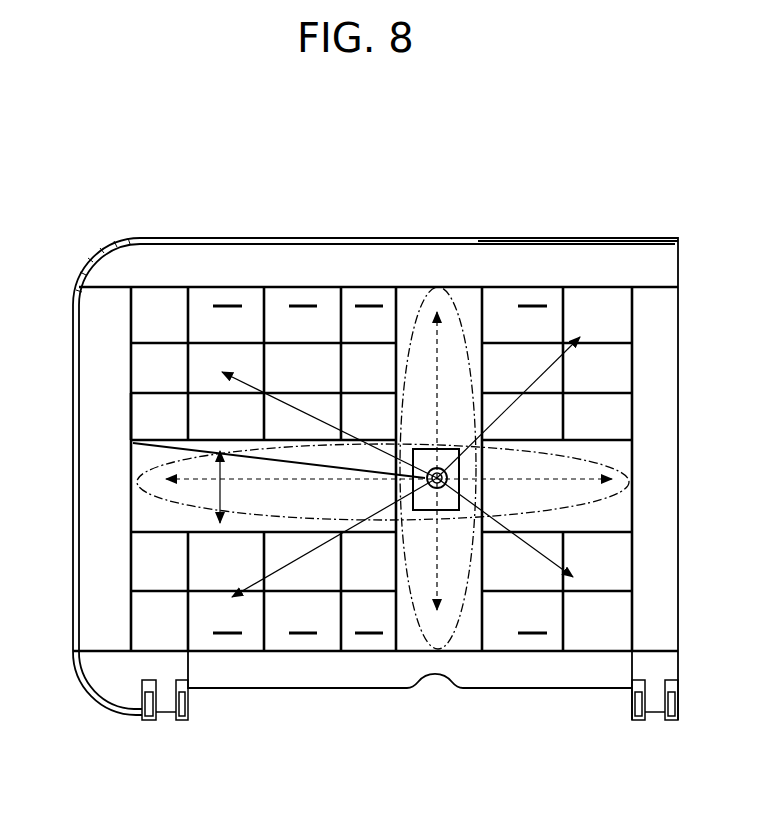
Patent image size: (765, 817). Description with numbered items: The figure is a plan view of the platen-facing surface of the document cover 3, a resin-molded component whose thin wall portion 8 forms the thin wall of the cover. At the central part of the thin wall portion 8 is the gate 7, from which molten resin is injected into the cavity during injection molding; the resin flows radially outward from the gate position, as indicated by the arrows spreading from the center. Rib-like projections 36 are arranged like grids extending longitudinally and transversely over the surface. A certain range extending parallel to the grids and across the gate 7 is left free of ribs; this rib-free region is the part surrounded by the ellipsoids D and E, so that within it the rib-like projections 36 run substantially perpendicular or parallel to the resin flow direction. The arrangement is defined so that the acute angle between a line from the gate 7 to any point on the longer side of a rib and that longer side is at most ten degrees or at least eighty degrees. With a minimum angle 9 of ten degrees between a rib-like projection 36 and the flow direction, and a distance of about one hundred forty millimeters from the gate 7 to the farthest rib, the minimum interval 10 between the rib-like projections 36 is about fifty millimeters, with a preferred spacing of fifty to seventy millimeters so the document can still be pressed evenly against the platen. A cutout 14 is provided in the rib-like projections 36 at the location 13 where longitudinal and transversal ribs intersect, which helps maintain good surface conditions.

The document cover 3 is at (528, 257).
The gate 7 is at (432, 446).
The thin wall portion 8 is at (424, 340).
The minimum angle 9 is at (334, 453).
The minimum interval 10 is at (223, 497).
The intersection of rib-like projections 13 is at (340, 388).
The cutout 14 is at (262, 388).
The rib-like projections 36 is at (188, 407).
The ellipsoid D is at (148, 470).
The ellipsoid E is at (458, 297).